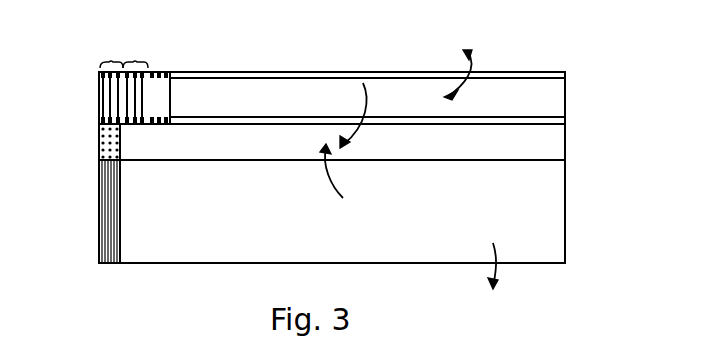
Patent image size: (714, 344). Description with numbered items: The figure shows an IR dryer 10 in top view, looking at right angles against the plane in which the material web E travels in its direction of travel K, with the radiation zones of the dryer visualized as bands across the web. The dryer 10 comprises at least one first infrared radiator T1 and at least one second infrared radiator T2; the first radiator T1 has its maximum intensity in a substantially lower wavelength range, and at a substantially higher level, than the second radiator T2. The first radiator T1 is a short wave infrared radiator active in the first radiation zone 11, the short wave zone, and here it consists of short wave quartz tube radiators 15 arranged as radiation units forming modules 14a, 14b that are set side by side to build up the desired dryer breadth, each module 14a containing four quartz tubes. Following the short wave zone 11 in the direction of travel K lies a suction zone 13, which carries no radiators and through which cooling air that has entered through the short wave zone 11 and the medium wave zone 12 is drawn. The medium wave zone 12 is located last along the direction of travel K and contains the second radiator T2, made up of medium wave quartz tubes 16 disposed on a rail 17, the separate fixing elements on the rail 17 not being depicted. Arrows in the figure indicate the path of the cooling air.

The IR dryer 10 is at (258, 54).
The first radiation zone 11 is at (570, 73).
The second radiation zone 12 is at (570, 263).
The suction zone 13 is at (570, 125).
The module 14a is at (115, 60).
The module 14b is at (138, 60).
The short wave quartz tube radiators 15 is at (99, 99).
The medium wave quartz tubes 16 is at (122, 264).
The rail 17 is at (100, 145).
The first infrared radiator T1 is at (104, 60).
The second infrared radiator T2 is at (157, 256).
The material web E is at (371, 43).
The direction of travel K is at (513, 10).